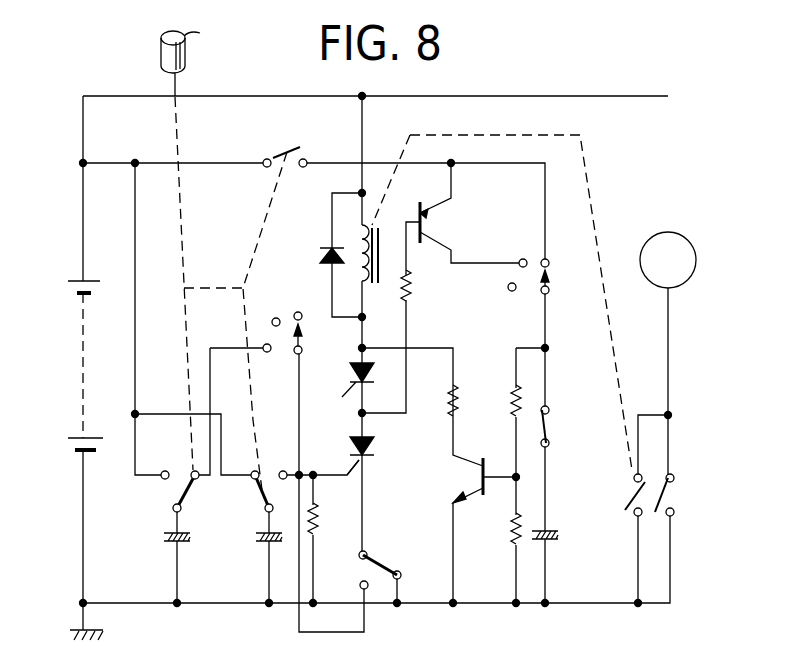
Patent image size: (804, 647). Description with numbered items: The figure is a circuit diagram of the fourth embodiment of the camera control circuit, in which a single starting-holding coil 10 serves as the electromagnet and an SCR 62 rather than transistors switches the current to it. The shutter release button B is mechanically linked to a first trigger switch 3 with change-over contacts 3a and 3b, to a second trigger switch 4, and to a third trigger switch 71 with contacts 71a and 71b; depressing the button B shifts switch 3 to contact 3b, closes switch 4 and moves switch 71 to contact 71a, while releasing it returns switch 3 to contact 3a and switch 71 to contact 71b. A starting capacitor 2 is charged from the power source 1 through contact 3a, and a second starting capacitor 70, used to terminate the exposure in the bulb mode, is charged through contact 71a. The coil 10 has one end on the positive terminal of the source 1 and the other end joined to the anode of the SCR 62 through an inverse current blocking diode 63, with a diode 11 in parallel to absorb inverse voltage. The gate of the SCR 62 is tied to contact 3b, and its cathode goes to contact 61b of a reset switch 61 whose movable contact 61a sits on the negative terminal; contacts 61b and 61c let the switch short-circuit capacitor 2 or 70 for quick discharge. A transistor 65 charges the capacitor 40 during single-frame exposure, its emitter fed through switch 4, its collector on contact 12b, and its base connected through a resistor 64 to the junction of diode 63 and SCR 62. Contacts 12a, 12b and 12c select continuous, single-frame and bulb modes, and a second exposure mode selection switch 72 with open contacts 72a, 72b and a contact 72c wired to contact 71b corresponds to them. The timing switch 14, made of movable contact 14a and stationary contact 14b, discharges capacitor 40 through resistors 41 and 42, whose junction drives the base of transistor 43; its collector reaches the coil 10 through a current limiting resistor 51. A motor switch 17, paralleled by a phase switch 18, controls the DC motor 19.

The shutter release button B is at (183, 63).
The power source 1 is at (85, 392).
The starting capacitor 2 is at (256, 540).
The first trigger switch 3 is at (273, 484).
The contact 3a is at (257, 482).
The contact 3b is at (284, 468).
The second trigger switch 4 is at (288, 155).
The starting-holding coil 10 is at (372, 290).
The diode 11 is at (320, 256).
The contact 12a is at (548, 259).
The contact 12b is at (522, 255).
The contact 12c is at (512, 291).
The timing switch 14 is at (550, 446).
The movable contact 14a is at (550, 428).
The stationary contact 14b is at (550, 410).
The motor switch 17 is at (626, 500).
The phase switch 18 is at (679, 494).
The DC motor 19 is at (658, 234).
The capacitor 40 is at (565, 535).
The resistor 41 is at (512, 394).
The resistor 42 is at (510, 534).
The transistor 43 is at (475, 477).
The current limiting resistor 51 is at (450, 394).
The reset switch 61 is at (403, 576).
The movable contact 61a is at (398, 570).
The contact 61b is at (367, 547).
The contact 61c is at (360, 585).
The SCR 62 is at (378, 450).
The inverse current blocking diode 63 is at (353, 393).
The resistor 64 is at (418, 287).
The transistor 65 is at (438, 222).
The second starting capacitor 70 is at (164, 540).
The third trigger switch 71 is at (189, 470).
The contact 71a is at (165, 482).
The contact 71b is at (197, 482).
The second exposure mode selection switch 72 is at (304, 354).
The contact 72a is at (305, 320).
The contact 72b is at (274, 315).
The contact 72c is at (264, 354).